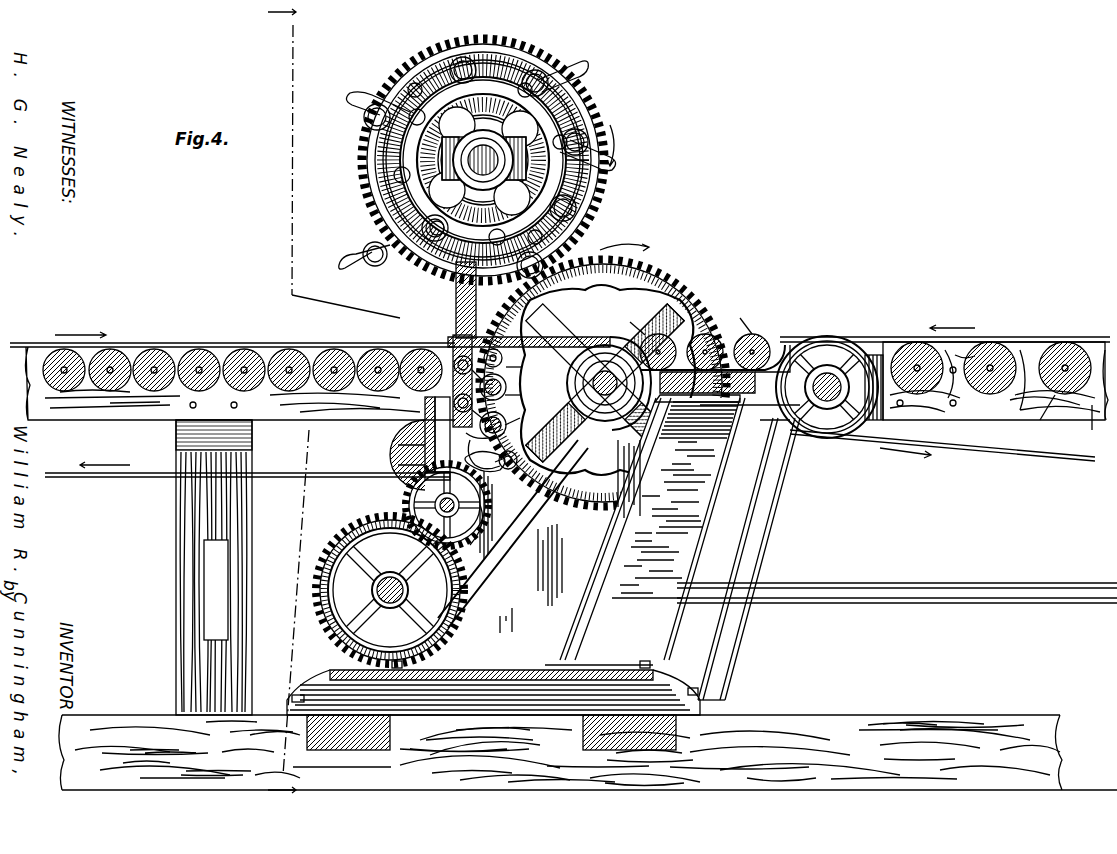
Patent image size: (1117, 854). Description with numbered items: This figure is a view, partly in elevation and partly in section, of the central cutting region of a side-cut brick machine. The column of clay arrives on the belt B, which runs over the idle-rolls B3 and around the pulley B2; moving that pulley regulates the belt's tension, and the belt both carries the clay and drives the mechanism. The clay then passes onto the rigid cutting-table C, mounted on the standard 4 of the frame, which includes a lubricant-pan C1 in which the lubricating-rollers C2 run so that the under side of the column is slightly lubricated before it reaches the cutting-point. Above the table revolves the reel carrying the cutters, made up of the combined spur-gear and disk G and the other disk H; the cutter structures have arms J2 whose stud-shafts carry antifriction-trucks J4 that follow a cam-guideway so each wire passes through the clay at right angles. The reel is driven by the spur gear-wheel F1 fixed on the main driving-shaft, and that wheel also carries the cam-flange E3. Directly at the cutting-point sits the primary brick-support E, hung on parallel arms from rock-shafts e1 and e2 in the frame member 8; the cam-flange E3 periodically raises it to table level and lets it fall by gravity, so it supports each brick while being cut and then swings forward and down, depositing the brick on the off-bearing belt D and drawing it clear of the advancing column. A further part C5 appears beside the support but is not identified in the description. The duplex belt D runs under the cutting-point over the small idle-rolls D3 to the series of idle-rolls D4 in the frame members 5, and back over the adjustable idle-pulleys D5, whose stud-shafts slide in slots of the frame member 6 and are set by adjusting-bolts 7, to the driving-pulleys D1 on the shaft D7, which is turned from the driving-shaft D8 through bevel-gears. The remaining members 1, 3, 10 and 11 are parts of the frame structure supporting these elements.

The spur gear-wheel G is at (600, 105).
The arms J2 is at (628, 195).
The antifriction-trucks J4 is at (588, 58).
The disk H is at (590, 85).
The primary brick-support E is at (448, 333).
The spur gear-wheel F1 is at (660, 272).
The cam-flange E3 is at (690, 292).
The cutting-table C is at (575, 332).
The lubricating-rollers C2 is at (768, 330).
The lubricant-pan C1 is at (757, 307).
The lever C5 is at (500, 470).
The off-bearing belt D is at (270, 345).
The driving-pulleys D1 is at (490, 545).
The small idle-rolls D3 is at (527, 362).
The idle-rolls D4 is at (356, 390).
The adjustable idle-pulleys D5 is at (405, 500).
The shaft D7 is at (370, 590).
The driving-shaft D8 is at (790, 604).
The rock-shaft e1 is at (523, 393).
The rock-shaft e2 is at (523, 414).
The belt B is at (1036, 340).
The pulley B2 is at (860, 342).
The idle-rolls B3 is at (1040, 417).
The frame member 1 is at (128, 715).
The frame member 3 is at (1090, 428).
The standard 4 is at (700, 512).
The frame members 5 is at (116, 425).
The frame member 6 is at (400, 455).
The adjusting-bolts 7 is at (488, 522).
The frame member 8 is at (425, 405).
The frame member 10 is at (760, 520).
The frame member 11 is at (185, 532).